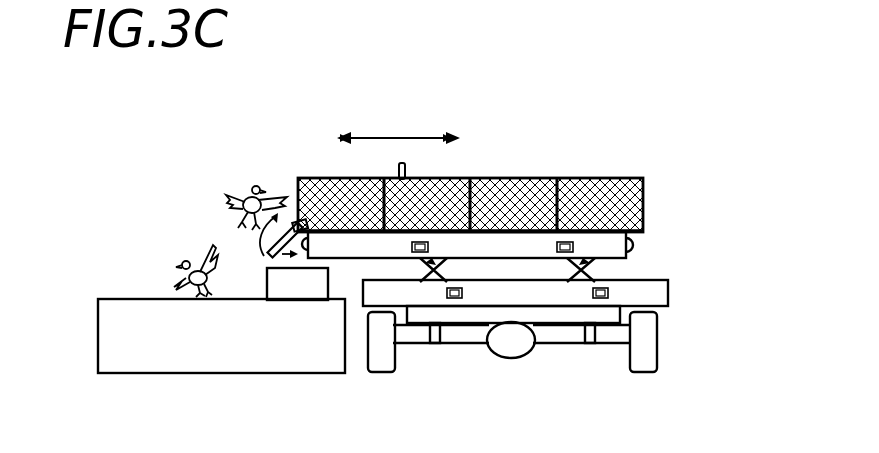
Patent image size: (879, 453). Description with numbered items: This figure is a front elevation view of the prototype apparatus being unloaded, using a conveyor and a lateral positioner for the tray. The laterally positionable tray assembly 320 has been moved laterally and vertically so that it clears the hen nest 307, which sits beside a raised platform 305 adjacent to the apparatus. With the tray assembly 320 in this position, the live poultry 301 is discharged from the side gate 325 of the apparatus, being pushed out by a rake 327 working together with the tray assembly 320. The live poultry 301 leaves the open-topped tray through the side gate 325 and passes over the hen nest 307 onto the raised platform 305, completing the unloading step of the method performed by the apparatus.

The live poultry 301 is at (269, 192).
The raised platform 305 is at (120, 299).
The hen nest 307 is at (328, 285).
The laterally positionable tray assembly 320 is at (645, 206).
The side gate 325 is at (268, 257).
The rake 327 is at (402, 165).